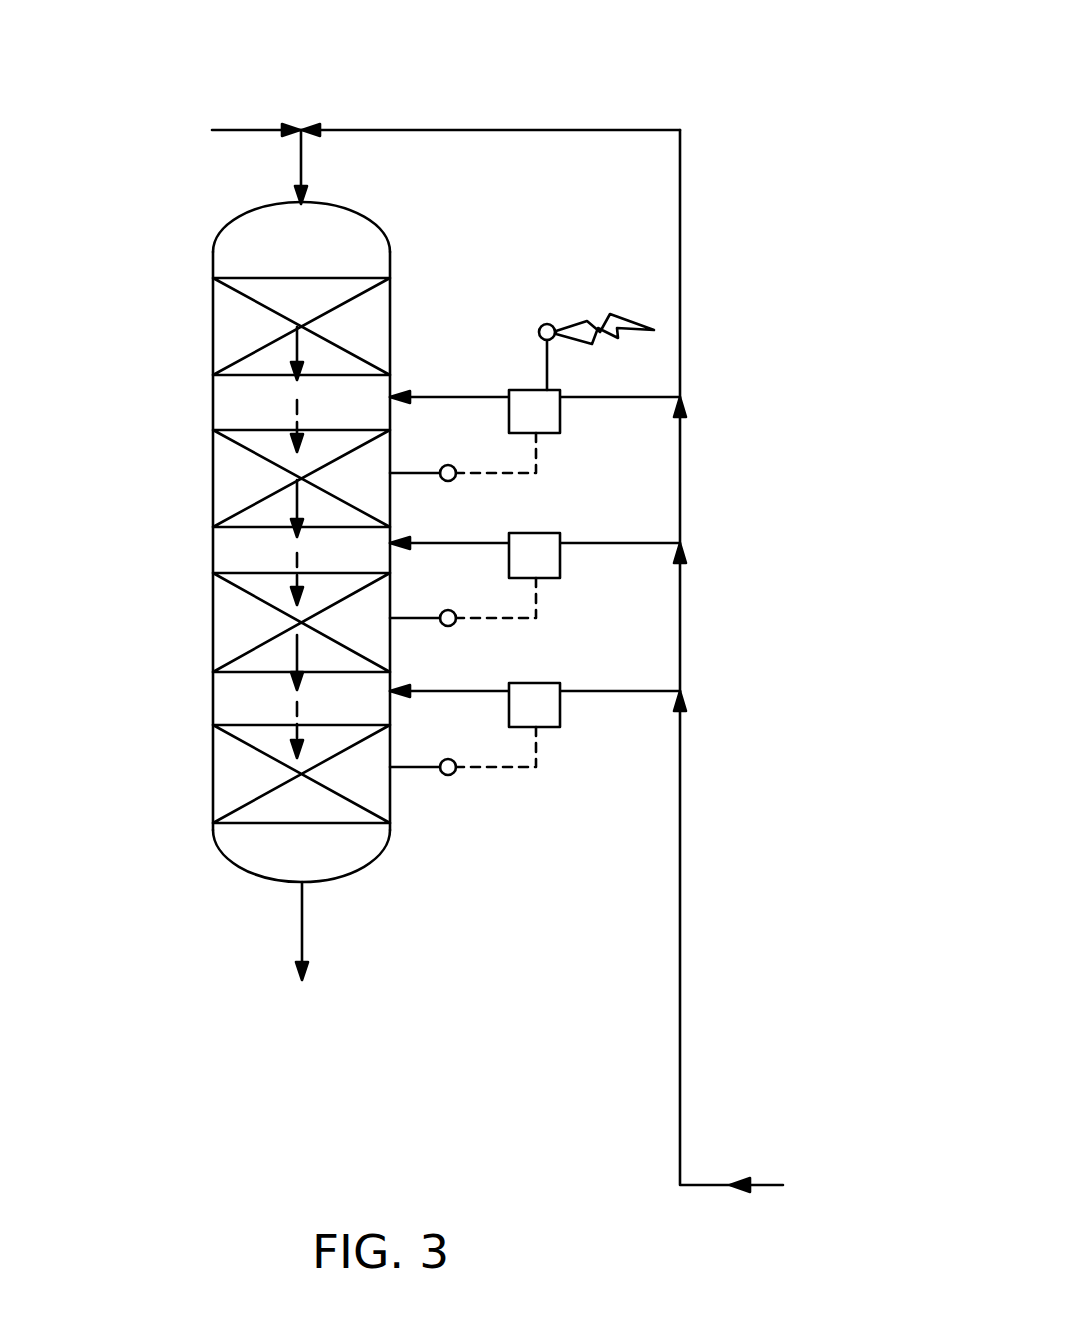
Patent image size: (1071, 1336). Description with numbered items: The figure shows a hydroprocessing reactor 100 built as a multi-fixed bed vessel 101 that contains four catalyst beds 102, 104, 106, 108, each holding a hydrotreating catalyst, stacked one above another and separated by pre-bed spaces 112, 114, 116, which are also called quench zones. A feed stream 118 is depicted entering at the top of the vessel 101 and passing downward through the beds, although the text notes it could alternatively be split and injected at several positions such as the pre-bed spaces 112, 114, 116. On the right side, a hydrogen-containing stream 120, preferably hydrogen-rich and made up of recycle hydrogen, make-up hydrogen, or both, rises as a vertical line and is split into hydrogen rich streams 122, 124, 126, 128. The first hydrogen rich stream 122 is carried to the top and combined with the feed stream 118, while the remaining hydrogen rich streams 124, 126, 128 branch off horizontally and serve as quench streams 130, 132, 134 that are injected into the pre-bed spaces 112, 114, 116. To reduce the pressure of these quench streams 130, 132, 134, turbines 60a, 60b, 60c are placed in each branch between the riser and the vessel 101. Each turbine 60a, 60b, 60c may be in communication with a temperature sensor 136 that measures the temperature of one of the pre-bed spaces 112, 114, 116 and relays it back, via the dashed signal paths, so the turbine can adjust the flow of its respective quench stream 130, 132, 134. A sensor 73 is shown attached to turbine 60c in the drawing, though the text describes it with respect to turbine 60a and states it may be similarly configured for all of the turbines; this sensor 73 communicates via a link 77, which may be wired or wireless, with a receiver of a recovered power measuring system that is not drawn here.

The hydroprocessing reactor 100 is at (753, 40).
The multi-fixed bed vessel 101 is at (358, 214).
The catalyst bed 102 is at (230, 324).
The catalyst bed 104 is at (230, 481).
The catalyst bed 106 is at (230, 628).
The catalyst bed 108 is at (230, 777).
The pre-bed space 112 is at (228, 429).
The pre-bed space 114 is at (230, 558).
The pre-bed space 116 is at (230, 710).
The feed stream 118 is at (240, 128).
The hydrogen-containing stream 120 is at (680, 967).
The first hydrogen rich stream 122 is at (680, 237).
The hydrogen rich stream 124 is at (633, 397).
The hydrogen rich stream 126 is at (633, 543).
The hydrogen rich stream 128 is at (630, 691).
The quench stream 130 is at (423, 396).
The quench stream 132 is at (423, 542).
The quench stream 134 is at (423, 690).
The turbine 60a is at (509, 716).
The turbine 60b is at (509, 566).
The turbine 60c is at (509, 418).
The sensor 73 is at (541, 325).
The communication 77 is at (615, 318).
The temperature sensor 136 is at (515, 474).